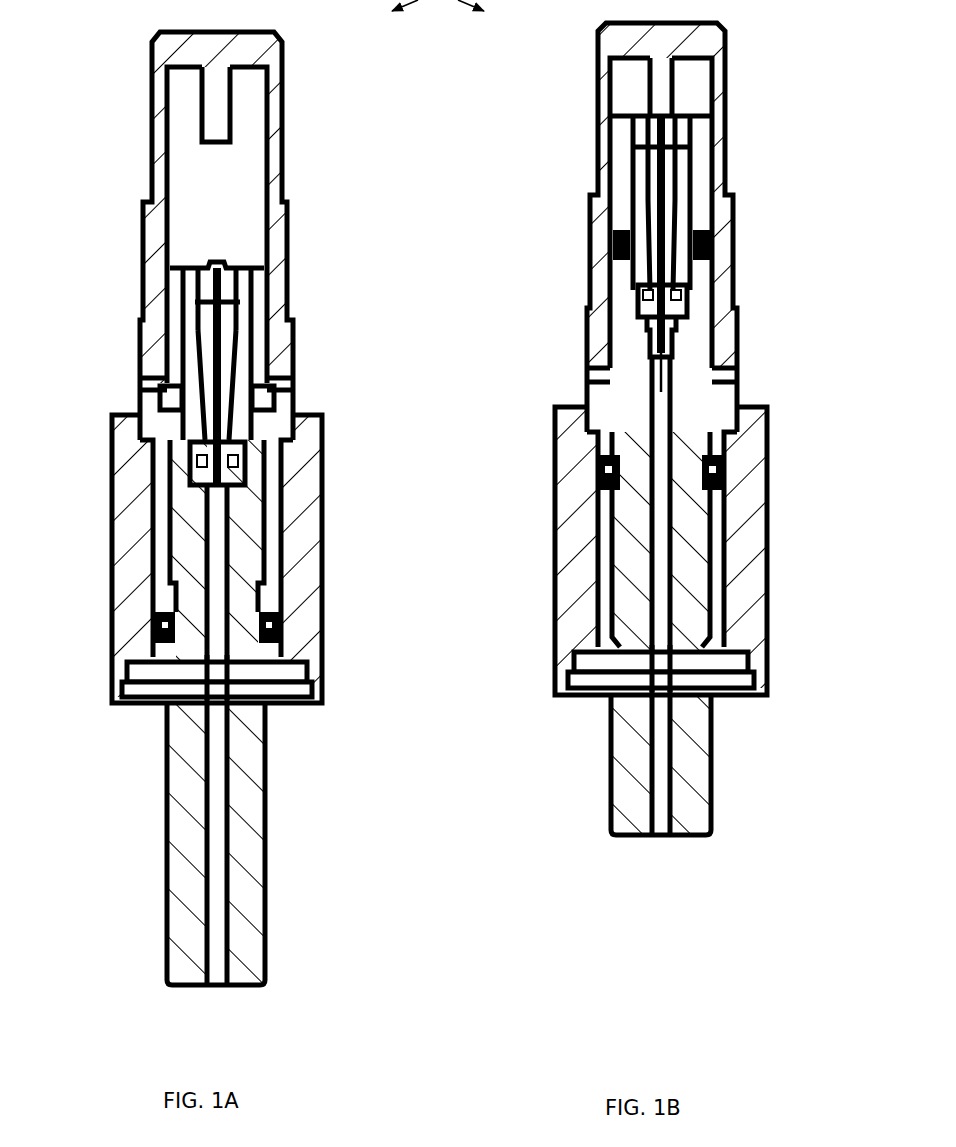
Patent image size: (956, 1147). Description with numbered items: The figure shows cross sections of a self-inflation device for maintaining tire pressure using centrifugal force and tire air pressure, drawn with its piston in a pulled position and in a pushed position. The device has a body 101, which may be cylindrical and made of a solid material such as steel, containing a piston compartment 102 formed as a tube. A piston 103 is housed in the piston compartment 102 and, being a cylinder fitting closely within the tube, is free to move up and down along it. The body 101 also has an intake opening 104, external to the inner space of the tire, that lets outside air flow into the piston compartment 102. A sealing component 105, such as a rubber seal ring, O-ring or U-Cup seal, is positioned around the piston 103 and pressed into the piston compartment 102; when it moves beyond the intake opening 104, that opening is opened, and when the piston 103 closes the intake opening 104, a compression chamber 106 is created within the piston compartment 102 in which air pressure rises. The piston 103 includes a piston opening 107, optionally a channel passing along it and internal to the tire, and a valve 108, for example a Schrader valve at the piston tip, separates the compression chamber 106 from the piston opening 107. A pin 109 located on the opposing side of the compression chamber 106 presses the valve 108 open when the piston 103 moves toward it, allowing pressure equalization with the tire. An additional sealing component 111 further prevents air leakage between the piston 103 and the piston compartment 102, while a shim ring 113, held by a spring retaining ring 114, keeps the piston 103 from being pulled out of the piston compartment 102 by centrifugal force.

In FIG. 1A, the body 101 is at (300, 450).
In FIG. 1B, the body 101 is at (580, 465).
In FIG. 1A, the piston compartment 102 is at (275, 165).
In FIG. 1B, the piston compartment 102 is at (610, 165).
In FIG. 1A, the piston 103 is at (248, 575).
In FIG. 1B, the piston 103 is at (637, 575).
In FIG. 1A, the intake opening 104 is at (138, 378).
In FIG. 1B, the intake opening 104 is at (742, 368).
In FIG. 1A, the sealing component 105 is at (266, 395).
In FIG. 1B, the sealing component 105 is at (714, 240).
In FIG. 1B, the compression chamber 106 is at (683, 130).
In FIG. 1A, the piston opening 107 is at (228, 822).
In FIG. 1B, the piston opening 107 is at (643, 792).
In FIG. 1A, the valve 108 is at (195, 320).
In FIG. 1B, the valve 108 is at (690, 215).
In FIG. 1A, the pin 109 is at (215, 97).
In FIG. 1B, the pin 109 is at (650, 88).
In FIG. 1A, the additional sealing component 111 is at (152, 628).
In FIG. 1B, the additional sealing component 111 is at (727, 470).
In FIG. 1A, the shim ring 113 is at (217, 672).
In FIG. 1B, the shim ring 113 is at (700, 663).
In FIG. 1A, the spring retaining ring 114 is at (217, 689).
In FIG. 1B, the spring retaining ring 114 is at (740, 688).